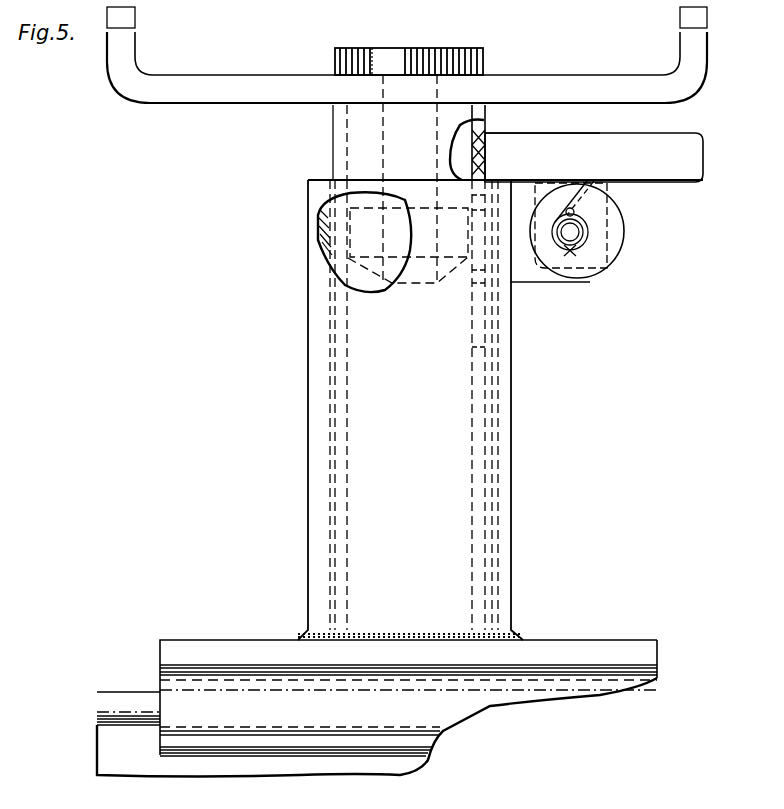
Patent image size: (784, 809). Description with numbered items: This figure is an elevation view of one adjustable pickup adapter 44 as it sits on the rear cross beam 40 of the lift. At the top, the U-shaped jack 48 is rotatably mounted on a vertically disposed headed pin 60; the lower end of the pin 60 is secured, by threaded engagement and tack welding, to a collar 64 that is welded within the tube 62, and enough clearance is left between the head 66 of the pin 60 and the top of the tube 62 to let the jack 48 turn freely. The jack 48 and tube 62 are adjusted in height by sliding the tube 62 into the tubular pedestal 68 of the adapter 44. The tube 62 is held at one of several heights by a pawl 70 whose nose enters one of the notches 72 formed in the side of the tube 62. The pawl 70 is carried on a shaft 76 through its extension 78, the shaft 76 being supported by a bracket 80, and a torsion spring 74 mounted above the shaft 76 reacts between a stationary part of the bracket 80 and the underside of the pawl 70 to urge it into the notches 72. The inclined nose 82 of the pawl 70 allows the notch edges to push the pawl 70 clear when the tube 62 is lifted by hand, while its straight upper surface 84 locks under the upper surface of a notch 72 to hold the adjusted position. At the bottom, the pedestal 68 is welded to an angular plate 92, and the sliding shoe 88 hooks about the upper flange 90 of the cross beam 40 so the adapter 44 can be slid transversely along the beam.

The rear cross beam 40 is at (113, 757).
The pickup adapter 44 is at (512, 422).
The jack 48 is at (692, 62).
The headed pin 60 is at (395, 150).
The tube 62 is at (355, 122).
The collar 64 is at (360, 225).
The head 66 is at (430, 52).
The pedestal 68 is at (497, 365).
The pawl 70 is at (655, 145).
The notches 72 is at (478, 292).
The torsion spring 74 is at (540, 283).
The shaft 76 is at (578, 232).
The extension 78 is at (585, 183).
The bracket 80 is at (600, 272).
The inclined nose 82 is at (485, 134).
The straight upper surface 84 is at (575, 134).
The shoe 88 is at (555, 668).
The upper flange 90 is at (106, 718).
The angular plate 92 is at (628, 653).